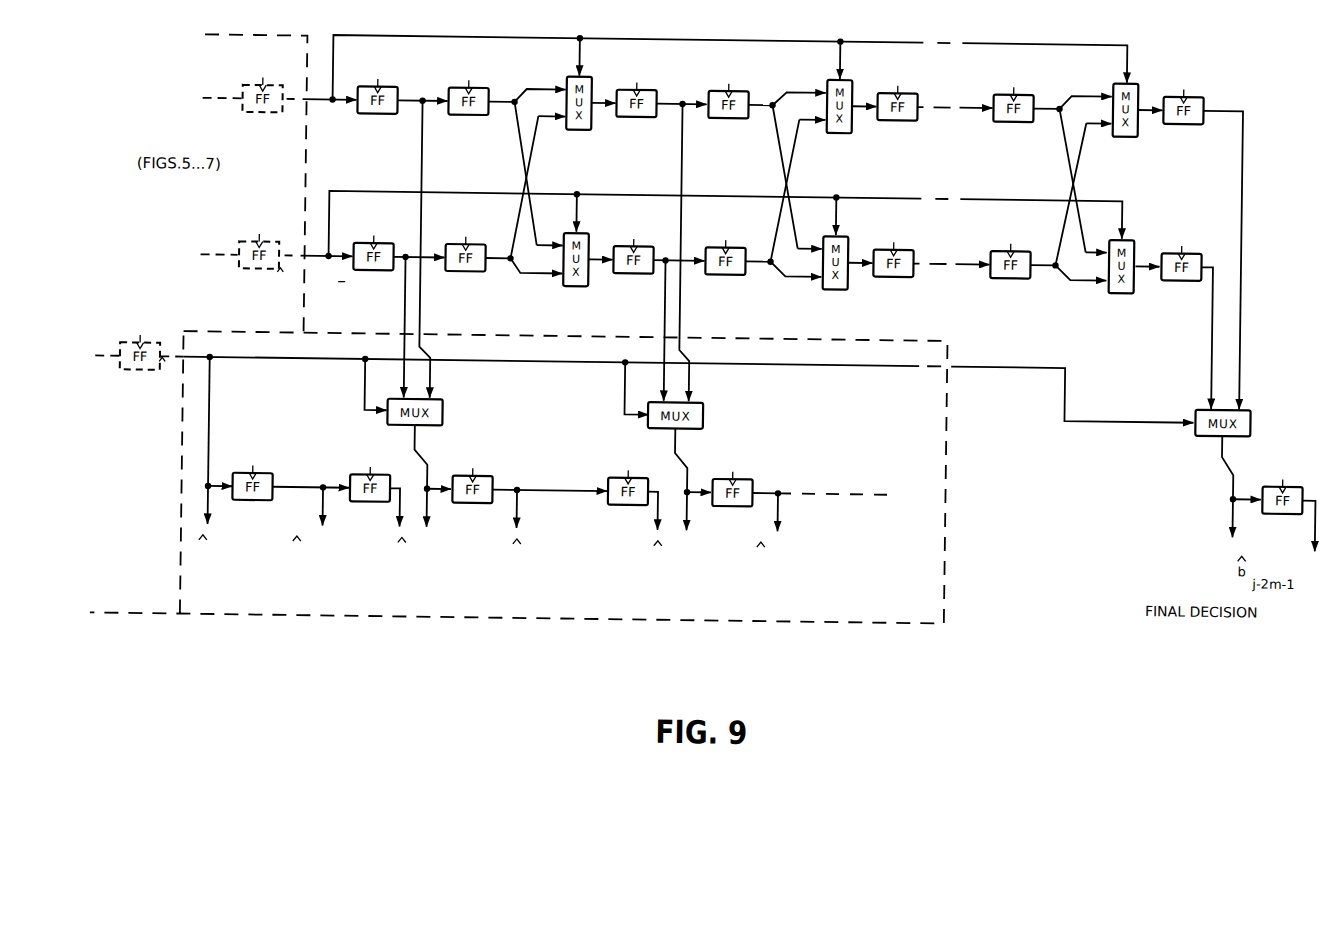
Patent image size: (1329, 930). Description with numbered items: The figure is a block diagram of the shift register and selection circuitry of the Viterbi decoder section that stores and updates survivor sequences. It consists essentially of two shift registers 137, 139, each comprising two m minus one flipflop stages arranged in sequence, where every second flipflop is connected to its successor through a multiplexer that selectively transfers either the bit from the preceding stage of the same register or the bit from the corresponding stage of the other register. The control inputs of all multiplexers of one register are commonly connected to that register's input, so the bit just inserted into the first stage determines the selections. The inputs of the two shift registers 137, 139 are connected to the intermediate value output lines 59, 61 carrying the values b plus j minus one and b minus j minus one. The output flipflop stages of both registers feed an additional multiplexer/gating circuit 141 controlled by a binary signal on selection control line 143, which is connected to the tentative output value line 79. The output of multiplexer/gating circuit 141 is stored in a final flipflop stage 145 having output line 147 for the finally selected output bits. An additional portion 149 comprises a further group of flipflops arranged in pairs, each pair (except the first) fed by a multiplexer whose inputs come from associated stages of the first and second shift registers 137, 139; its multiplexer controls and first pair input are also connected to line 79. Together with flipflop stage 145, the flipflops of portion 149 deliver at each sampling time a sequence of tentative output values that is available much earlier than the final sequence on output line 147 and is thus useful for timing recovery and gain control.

The output line 59 is at (318, 101).
The output line 61 is at (319, 241).
The tentative output value line 79 is at (238, 362).
The shift register 137 is at (1172, 54).
The shift register 139 is at (1156, 185).
The multiplexer/gating circuit 141 is at (1254, 414).
The selection control line 143 is at (1066, 402).
The final flipflop stage 145 is at (1298, 484).
The output line 147 is at (1318, 511).
The additional portion 149 is at (950, 492).